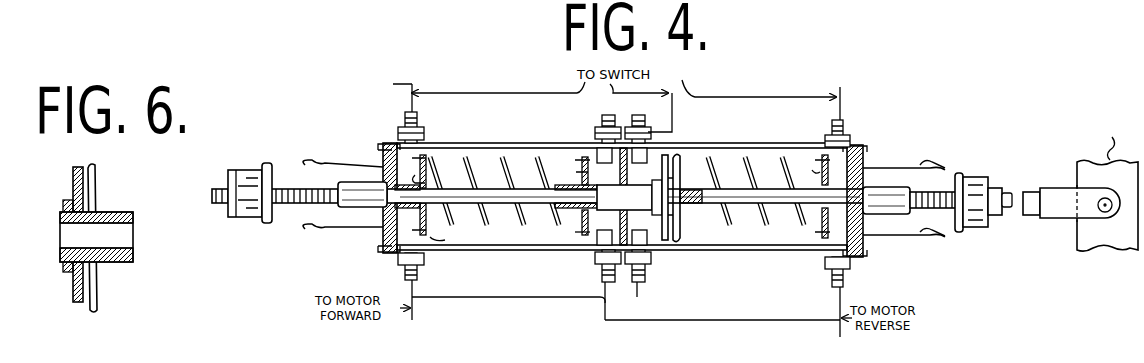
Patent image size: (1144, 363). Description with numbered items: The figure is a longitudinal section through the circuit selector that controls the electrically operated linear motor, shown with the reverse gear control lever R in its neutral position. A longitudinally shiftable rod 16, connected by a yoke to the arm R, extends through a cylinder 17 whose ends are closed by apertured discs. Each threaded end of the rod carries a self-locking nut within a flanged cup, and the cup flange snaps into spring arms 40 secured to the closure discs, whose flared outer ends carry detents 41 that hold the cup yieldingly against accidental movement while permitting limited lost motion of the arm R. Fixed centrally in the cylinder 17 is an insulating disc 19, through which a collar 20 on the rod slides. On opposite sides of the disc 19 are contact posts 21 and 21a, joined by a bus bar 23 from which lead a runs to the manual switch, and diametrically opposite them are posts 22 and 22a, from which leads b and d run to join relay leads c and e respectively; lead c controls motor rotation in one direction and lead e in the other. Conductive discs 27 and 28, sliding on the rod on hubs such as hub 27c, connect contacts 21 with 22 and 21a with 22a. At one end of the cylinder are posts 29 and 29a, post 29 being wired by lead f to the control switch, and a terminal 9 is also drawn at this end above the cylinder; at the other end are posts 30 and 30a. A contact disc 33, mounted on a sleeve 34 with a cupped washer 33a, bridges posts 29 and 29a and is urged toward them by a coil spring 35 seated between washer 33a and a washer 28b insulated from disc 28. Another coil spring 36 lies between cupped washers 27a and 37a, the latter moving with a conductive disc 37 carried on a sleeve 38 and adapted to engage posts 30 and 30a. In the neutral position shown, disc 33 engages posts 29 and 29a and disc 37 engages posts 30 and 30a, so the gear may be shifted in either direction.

In FIG. 4, the terminal bolt 9 is at (402, 198).
In FIG. 4, the longitudinally shiftable rod 16 is at (975, 225).
In FIG. 4, the cylinder 17 is at (765, 250).
In FIG. 4, the insulating plate or disc 19 is at (628, 176).
In FIG. 4, the collar 20 is at (629, 197).
In FIG. 4, the contact post 21 is at (668, 153).
In FIG. 4, the contact post 21a is at (592, 153).
In FIG. 4, the contact post 22 is at (650, 262).
In FIG. 4, the contact post 22a is at (605, 262).
In FIG. 4, the bus bar 23 is at (620, 125).
In FIG. 6, the conductive disc 27 is at (73, 183).
In FIG. 4, the conductive disc 27 is at (664, 225).
In FIG. 6, the cupped washer 27a is at (97, 178).
In FIG. 4, the cupped washer 27a is at (681, 160).
In FIG. 6, the hub 27c is at (110, 260).
In FIG. 4, the hub 27c is at (690, 208).
In FIG. 4, the conductive disc 28 is at (590, 172).
In FIG. 4, the washer 28b is at (582, 230).
In FIG. 4, the contact post 29 is at (385, 150).
In FIG. 4, the contact post 29a is at (383, 250).
In FIG. 4, the contact post 30 is at (866, 155).
In FIG. 4, the contact post 30a is at (866, 258).
In FIG. 4, the contact disc 33 is at (428, 152).
In FIG. 4, the cupped washer 33a is at (445, 240).
In FIG. 4, the sleeve 34 is at (362, 182).
In FIG. 4, the coil spring 35 is at (522, 137).
In FIG. 4, the coil spring 36 is at (782, 157).
In FIG. 4, the conductive disc 37 is at (824, 155).
In FIG. 4, the cupped washer 37a is at (811, 170).
In FIG. 4, the sleeve 38 is at (895, 187).
In FIG. 4, the spring arm 40 is at (945, 165).
In FIG. 4, the detent 41 is at (935, 168).
In FIG. 4, the lead a is at (670, 102).
In FIG. 4, the lead b is at (508, 298).
In FIG. 4, the lead c is at (415, 318).
In FIG. 4, the lead d is at (702, 322).
In FIG. 4, the lead e is at (838, 298).
In FIG. 4, the lead f is at (840, 102).
In FIG. 4, the reverse gear control lever R is at (1105, 252).